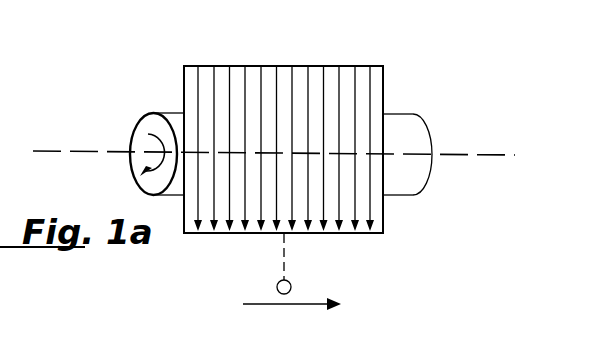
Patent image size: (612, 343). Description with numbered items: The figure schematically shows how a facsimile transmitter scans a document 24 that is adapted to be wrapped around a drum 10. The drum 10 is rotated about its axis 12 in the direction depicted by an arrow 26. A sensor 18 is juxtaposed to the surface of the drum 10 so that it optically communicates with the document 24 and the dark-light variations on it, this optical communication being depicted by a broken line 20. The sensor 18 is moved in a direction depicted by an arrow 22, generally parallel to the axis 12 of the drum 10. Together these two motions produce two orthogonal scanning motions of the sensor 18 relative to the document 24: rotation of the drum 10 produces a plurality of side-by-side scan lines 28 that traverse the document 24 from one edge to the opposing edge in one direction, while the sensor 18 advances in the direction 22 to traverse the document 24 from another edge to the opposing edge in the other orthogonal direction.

The drum 10 is at (405, 125).
The axis 12 is at (497, 155).
The sensor 18 is at (292, 284).
The broken line 20 is at (280, 257).
The arrow 22 is at (312, 306).
The document 24 is at (189, 66).
The arrow 26 is at (147, 134).
The scan lines 28 is at (262, 90).